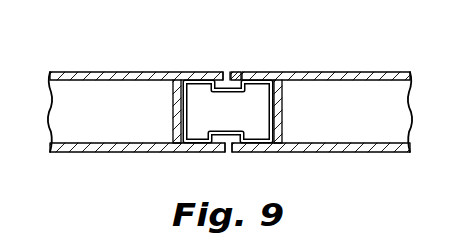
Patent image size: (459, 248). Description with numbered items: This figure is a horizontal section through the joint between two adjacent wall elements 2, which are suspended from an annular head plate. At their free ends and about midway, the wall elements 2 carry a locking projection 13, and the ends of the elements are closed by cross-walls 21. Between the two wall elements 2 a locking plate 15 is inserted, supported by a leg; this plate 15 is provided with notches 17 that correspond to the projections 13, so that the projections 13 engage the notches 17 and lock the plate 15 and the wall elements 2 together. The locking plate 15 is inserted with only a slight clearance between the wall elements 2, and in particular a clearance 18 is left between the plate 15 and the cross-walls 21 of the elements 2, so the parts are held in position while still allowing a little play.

The wall element 2 is at (66, 72).
The cross-wall 21 is at (297, 117).
The locking plate 15 is at (195, 96).
The notch 17 is at (231, 92).
The locking projection 13 is at (236, 73).
The clearance 18 is at (284, 95).